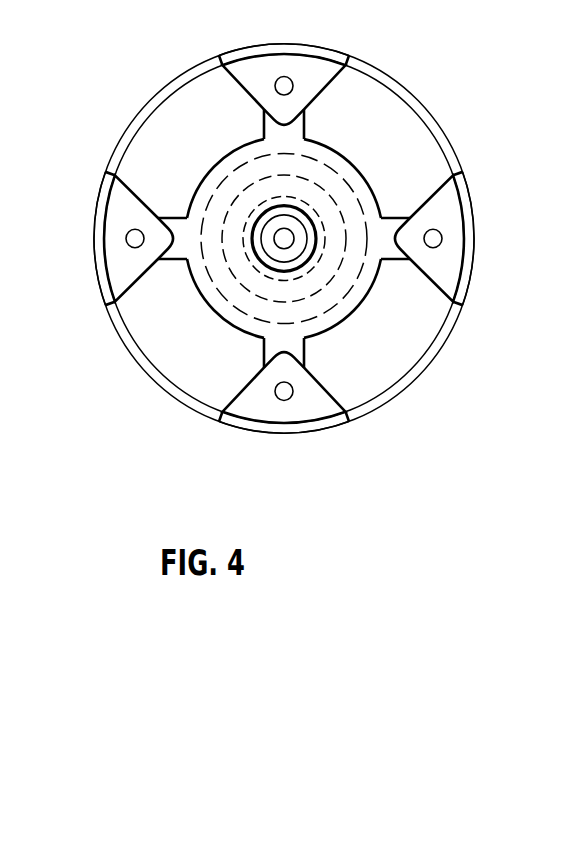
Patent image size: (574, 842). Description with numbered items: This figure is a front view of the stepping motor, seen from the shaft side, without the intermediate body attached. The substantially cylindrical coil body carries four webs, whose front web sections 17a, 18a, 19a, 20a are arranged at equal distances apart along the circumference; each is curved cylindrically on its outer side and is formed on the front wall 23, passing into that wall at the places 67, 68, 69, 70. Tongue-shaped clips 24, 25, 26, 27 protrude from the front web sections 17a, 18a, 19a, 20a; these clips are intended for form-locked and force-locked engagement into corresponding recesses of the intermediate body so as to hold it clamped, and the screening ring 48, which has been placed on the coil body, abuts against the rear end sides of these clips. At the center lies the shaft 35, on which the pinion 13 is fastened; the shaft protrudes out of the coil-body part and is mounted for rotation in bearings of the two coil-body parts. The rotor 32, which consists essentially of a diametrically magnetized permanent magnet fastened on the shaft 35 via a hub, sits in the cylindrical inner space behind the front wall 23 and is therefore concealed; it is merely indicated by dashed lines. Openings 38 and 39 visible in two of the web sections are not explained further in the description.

The pinion 13 is at (289, 260).
The front web section 17a is at (118, 204).
The front web section 18a is at (318, 407).
The front web section 19a is at (318, 77).
The front web section 20a is at (445, 212).
The front wall 23 is at (350, 193).
The tongue-shaped clip 24 is at (94, 243).
The tongue-shaped clip 25 is at (293, 45).
The tongue-shaped clip 26 is at (472, 265).
The tongue-shaped clip 27 is at (261, 429).
The rotor 32 is at (260, 266).
The shaft 35 is at (292, 244).
The fastening hole 38 is at (128, 243).
The fastening hole 39 is at (283, 395).
The screening ring 48 is at (144, 110).
The place where web section passes into front wall 67 is at (308, 122).
The place where web section passes into front wall 68 is at (398, 266).
The place where web section passes into front wall 69 is at (262, 357).
The place where web section passes into front wall 70 is at (162, 260).